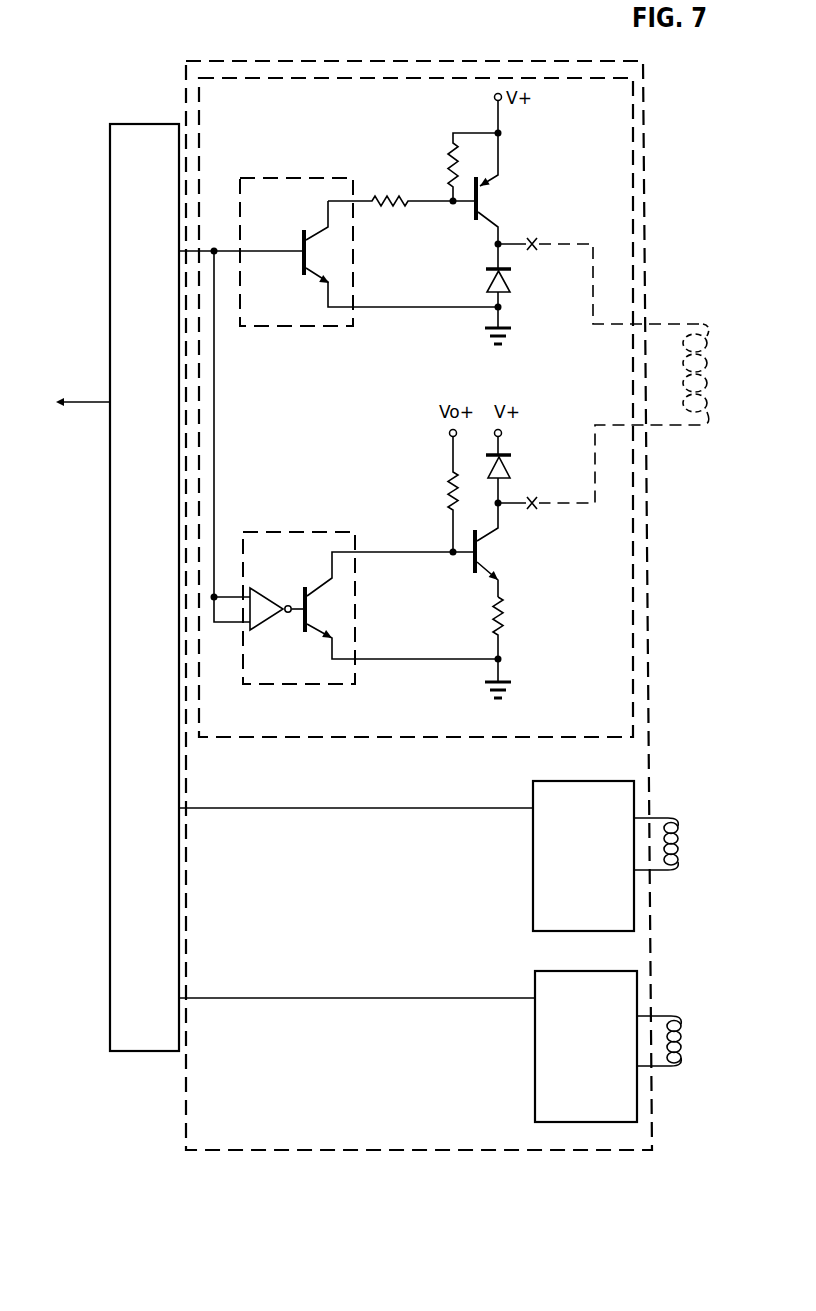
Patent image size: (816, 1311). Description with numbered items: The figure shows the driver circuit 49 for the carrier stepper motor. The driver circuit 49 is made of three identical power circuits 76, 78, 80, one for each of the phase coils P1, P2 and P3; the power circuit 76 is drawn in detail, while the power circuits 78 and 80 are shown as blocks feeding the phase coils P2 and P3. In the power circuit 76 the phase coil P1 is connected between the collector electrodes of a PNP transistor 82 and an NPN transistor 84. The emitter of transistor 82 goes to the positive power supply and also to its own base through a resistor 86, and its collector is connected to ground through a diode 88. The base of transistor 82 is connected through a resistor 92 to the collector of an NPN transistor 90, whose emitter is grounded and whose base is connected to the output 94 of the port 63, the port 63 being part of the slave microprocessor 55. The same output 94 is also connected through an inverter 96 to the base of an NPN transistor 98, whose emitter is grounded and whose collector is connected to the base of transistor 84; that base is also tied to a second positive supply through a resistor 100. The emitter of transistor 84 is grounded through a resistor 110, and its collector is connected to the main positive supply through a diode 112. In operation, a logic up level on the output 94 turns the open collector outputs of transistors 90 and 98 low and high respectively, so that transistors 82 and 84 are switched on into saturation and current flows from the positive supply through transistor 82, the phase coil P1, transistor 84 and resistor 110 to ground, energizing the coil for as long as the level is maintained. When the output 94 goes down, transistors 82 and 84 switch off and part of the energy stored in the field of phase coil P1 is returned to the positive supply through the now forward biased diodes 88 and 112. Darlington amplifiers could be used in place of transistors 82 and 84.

The driver circuit 49 is at (647, 266).
The power circuit 76 is at (640, 224).
The port 63 is at (157, 331).
The slave microprocessor 55 is at (62, 459).
The output 94 is at (212, 246).
The NPN transistor 90 is at (302, 262).
The resistor 92 is at (388, 207).
The resistor 86 is at (450, 162).
The PNP transistor 82 is at (472, 208).
The diode 88 is at (511, 279).
The phase coil P1 is at (703, 426).
The inverter 96 is at (268, 620).
The NPN transistor 98 is at (304, 590).
The resistor 100 is at (447, 492).
The diode 112 is at (511, 466).
The NPN transistor 84 is at (470, 565).
The resistor 110 is at (503, 620).
The power circuit 78 is at (533, 797).
The phase coil P2 is at (678, 858).
The power circuit 80 is at (535, 987).
The phase coil P3 is at (680, 1048).